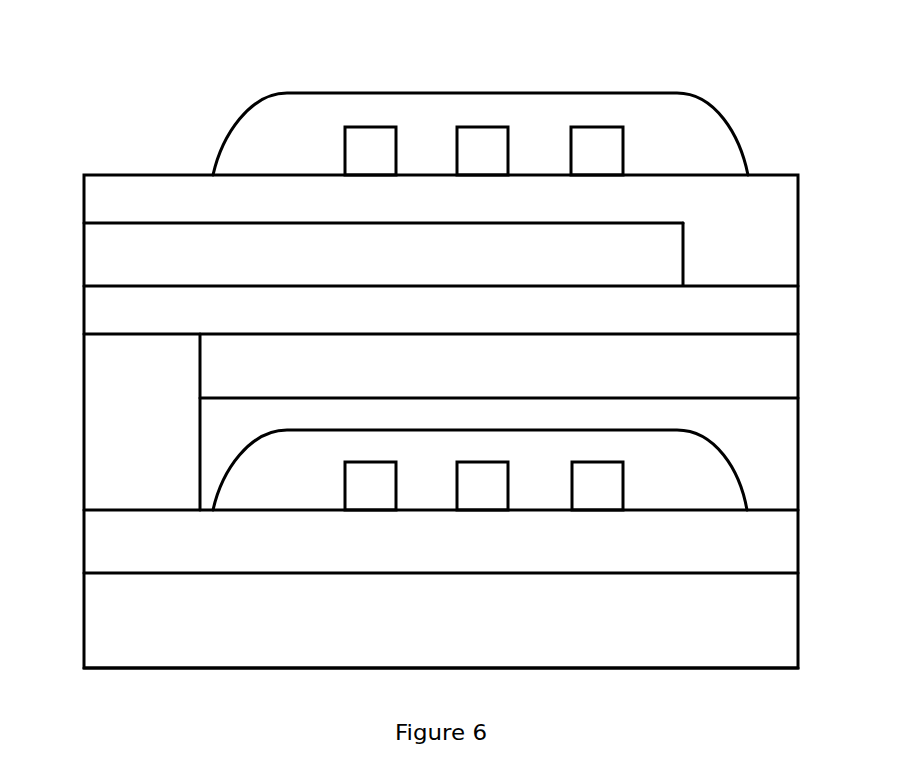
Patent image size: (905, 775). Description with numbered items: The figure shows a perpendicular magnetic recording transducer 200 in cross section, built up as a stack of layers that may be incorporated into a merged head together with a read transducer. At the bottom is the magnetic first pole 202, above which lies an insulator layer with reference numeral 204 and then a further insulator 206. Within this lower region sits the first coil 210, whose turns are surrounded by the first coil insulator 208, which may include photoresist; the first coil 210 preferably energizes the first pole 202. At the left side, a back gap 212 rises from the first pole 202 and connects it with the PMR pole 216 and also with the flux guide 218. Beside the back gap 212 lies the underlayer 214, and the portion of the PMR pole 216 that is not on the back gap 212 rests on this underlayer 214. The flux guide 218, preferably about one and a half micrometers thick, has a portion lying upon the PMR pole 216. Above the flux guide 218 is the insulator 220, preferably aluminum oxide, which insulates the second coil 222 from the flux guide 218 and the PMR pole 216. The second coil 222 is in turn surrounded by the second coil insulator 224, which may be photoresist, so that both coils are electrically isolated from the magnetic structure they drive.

The perpendicular magnetic recording transducer 200 is at (462, 42).
The first pole 202 is at (84, 636).
The insulator 204 is at (798, 553).
The insulator 206 is at (798, 492).
The first coil insulator 208 is at (742, 475).
The first coil 210 is at (397, 510).
The back gap 212 is at (84, 493).
The underlayer 214 is at (733, 334).
The PMR pole 216 is at (84, 305).
The flux guide 218 is at (84, 242).
The insulator 220 is at (150, 175).
The second coil 222 is at (584, 127).
The second coil insulator 224 is at (732, 120).